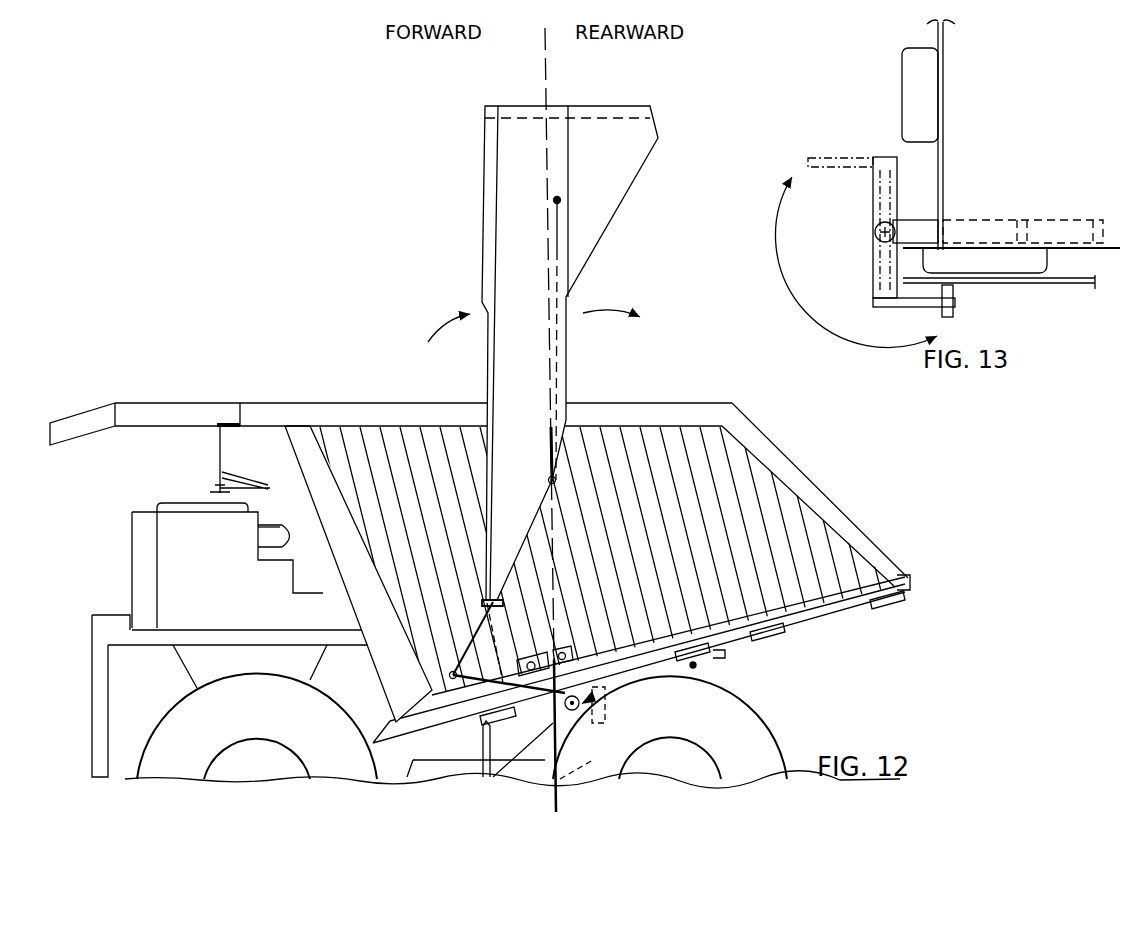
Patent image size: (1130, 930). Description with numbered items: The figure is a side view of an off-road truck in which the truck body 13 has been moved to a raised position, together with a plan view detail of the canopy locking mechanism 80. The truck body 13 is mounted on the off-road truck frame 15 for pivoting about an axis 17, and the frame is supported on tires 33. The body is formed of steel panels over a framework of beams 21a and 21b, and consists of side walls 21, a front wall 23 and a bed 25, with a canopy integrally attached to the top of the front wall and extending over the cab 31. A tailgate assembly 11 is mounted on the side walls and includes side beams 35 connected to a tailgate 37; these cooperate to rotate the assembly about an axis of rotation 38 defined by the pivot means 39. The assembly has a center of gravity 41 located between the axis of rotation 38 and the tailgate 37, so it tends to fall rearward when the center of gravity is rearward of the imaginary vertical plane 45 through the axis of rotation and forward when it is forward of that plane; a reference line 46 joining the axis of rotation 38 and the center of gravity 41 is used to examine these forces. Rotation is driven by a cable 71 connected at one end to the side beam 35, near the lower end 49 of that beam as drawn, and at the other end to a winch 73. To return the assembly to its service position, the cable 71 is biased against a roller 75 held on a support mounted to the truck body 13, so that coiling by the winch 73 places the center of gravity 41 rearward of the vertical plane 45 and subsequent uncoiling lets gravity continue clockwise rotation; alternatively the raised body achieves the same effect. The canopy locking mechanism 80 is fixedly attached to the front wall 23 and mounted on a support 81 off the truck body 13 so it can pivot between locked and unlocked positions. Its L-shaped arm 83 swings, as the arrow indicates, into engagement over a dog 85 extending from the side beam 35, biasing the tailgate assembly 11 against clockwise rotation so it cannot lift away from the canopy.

In FIG. 12, the tailgate assembly 11 is at (622, 233).
In FIG. 12, the truck body 13 is at (636, 399).
In FIG. 13, the truck body 13 is at (952, 142).
In FIG. 12, the off-road truck frame 15 is at (458, 748).
In FIG. 12, the axis 17 is at (696, 664).
In FIG. 12, the side walls 21 is at (435, 510).
In FIG. 12, the beam 21a is at (366, 417).
In FIG. 12, the beam 21b is at (357, 603).
In FIG. 12, the front wall 23 is at (287, 537).
In FIG. 12, the bed 25 is at (817, 598).
In FIG. 12, the cab 31 is at (132, 560).
In FIG. 12, the tires 33 is at (195, 712).
In FIG. 12, the side beams 35 is at (612, 192).
In FIG. 13, the side beams 35 is at (1033, 278).
In FIG. 12, the tailgate 37 is at (588, 117).
In FIG. 12, the axis of rotation 38 is at (546, 484).
In FIG. 12, the pivot means 39 is at (544, 470).
In FIG. 12, the center of gravity 41 is at (557, 200).
In FIG. 12, the imaginary vertical plane 45 is at (545, 92).
In FIG. 12, the reference line 46 is at (557, 247).
In FIG. 12, the lower end of cover arm 49 is at (490, 603).
In FIG. 12, the cable 71 is at (486, 632).
In FIG. 12, the winch 73 is at (572, 711).
In FIG. 12, the roller 75 is at (452, 671).
In FIG. 12, the canopy locking mechanism 80 is at (211, 474).
In FIG. 13, the support 81 is at (927, 200).
In FIG. 13, the L-shaped arm 83 is at (873, 265).
In FIG. 13, the dog 85 is at (955, 290).